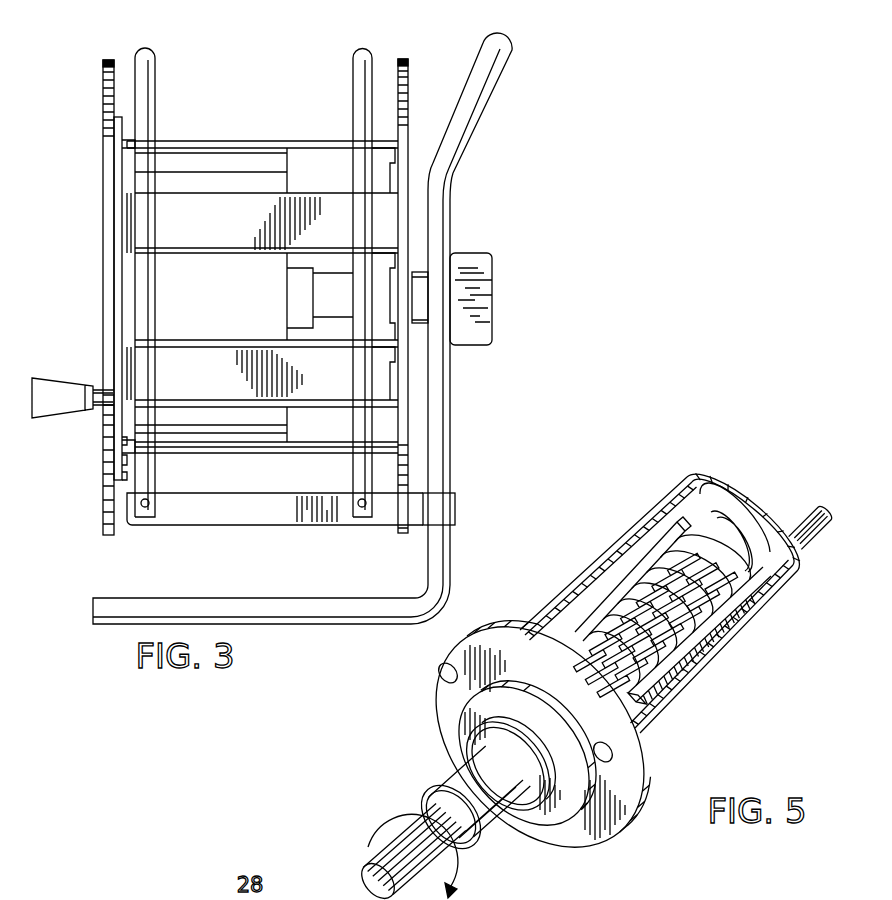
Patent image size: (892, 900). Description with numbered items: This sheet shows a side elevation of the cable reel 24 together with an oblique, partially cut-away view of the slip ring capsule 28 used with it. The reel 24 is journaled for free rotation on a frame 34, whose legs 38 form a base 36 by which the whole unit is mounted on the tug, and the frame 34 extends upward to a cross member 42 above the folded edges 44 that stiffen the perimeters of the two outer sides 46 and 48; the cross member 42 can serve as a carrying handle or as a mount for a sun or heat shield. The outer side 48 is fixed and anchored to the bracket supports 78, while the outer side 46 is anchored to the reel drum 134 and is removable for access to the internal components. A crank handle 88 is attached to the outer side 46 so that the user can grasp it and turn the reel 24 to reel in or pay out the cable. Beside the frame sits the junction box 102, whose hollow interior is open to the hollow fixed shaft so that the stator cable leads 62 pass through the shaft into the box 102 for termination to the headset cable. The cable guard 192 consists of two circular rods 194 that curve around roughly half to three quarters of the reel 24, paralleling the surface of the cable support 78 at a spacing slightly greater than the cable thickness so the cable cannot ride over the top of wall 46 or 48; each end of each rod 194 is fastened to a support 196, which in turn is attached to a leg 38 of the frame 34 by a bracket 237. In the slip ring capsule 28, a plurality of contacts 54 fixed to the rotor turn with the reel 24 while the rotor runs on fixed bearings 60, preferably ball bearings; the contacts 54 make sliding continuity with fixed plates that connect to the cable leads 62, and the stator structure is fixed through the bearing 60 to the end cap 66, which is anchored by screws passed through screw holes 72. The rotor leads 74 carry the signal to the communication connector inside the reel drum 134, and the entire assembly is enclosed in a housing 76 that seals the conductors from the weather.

In FIG. 3, the cable reel 24 is at (226, 140).
In FIG. 5, the slip ring capsule 28 is at (714, 691).
In FIG. 3, the frame 34 is at (452, 211).
In FIG. 3, the base 36 is at (233, 608).
In FIG. 3, the legs 38 is at (444, 435).
In FIG. 3, the cross member 42 is at (512, 50).
In FIG. 3, the folded edges 44 is at (105, 62).
In FIG. 3, the outer side 46 is at (103, 510).
In FIG. 3, the outer side 48 is at (403, 130).
In FIG. 5, the contacts 54 is at (677, 546).
In FIG. 5, the bearings 60 is at (723, 525).
In FIG. 5, the cable leads 62 is at (800, 527).
In FIG. 5, the end cap 66 is at (616, 818).
In FIG. 5, the screw holes 72 is at (612, 752).
In FIG. 5, the rotor leads 74 is at (457, 830).
In FIG. 5, the housing 76 is at (752, 625).
In FIG. 3, the bracket supports 78 is at (175, 216).
In FIG. 3, the crank handle 88 is at (50, 400).
In FIG. 3, the junction box 102 is at (480, 295).
In FIG. 3, the reel drum 134 is at (167, 300).
In FIG. 3, the cable guard 192 is at (252, 70).
In FIG. 3, the rods 194 is at (147, 114).
In FIG. 3, the support 196 is at (292, 508).
In FIG. 3, the bracket 237 is at (445, 500).